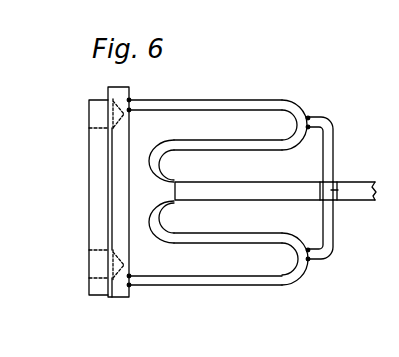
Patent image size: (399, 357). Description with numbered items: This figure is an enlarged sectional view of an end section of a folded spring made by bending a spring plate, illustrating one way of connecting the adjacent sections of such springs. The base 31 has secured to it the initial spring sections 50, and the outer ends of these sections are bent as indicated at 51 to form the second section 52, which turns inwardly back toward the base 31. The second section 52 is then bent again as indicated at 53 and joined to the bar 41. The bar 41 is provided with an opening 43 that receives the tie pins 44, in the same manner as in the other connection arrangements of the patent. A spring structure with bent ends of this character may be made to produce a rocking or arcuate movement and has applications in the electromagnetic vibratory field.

The base 31 is at (106, 193).
The bar 41 is at (229, 182).
The opening 43 is at (338, 181).
The tie pins 44 is at (327, 145).
The initial spring sections 50 is at (212, 77).
The bend 51 is at (304, 113).
The second section 52 is at (227, 119).
The bend 53 is at (158, 173).